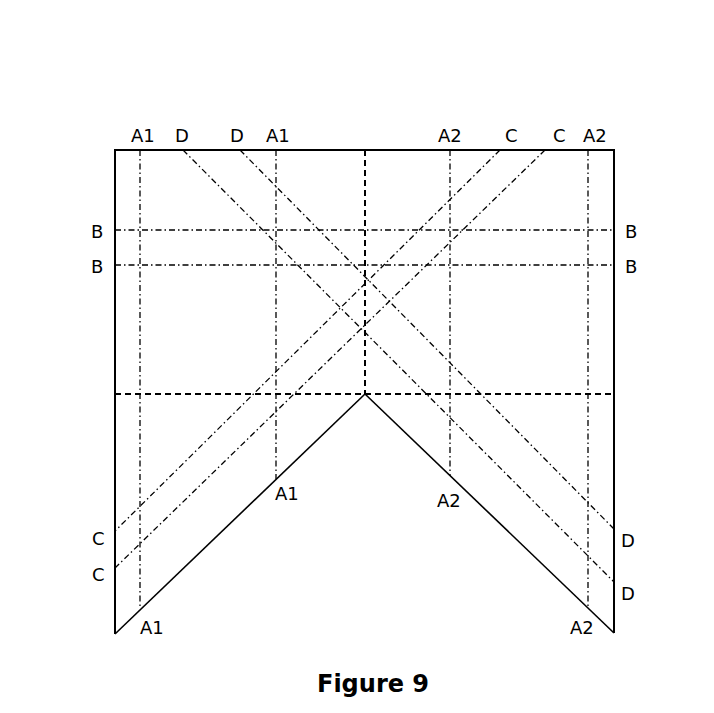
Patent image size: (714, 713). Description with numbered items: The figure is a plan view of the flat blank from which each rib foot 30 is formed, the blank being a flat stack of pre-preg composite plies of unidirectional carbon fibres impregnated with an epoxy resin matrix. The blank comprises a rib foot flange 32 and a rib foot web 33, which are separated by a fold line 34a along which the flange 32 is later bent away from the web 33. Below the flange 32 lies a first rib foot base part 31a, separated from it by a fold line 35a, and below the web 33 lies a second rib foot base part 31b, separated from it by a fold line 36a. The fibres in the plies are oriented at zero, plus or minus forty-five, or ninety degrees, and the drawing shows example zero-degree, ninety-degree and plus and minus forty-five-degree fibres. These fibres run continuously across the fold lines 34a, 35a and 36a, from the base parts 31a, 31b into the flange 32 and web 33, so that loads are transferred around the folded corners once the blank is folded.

The rib foot 30 is at (488, 88).
The rib foot flange 32 is at (171, 218).
The rib foot web 33 is at (546, 202).
The fold line 34a is at (364, 150).
The fold line 35a is at (185, 394).
The fold line 36a is at (545, 393).
The first rib foot base part 31a is at (155, 478).
The second rib foot base part 31b is at (585, 465).